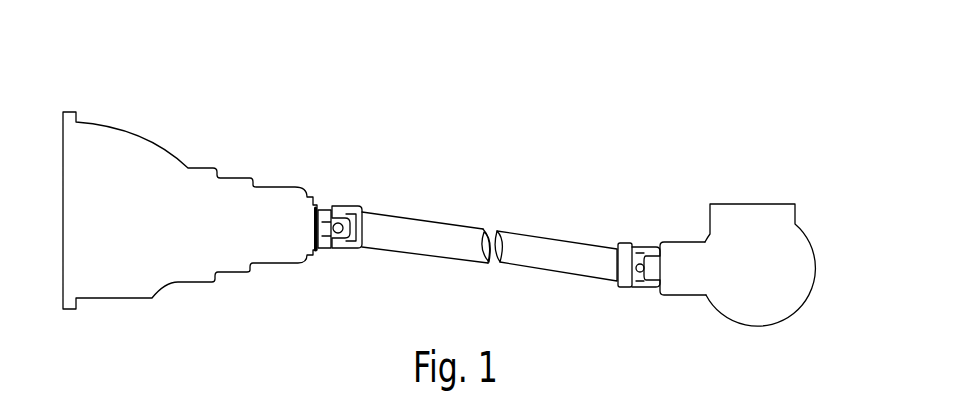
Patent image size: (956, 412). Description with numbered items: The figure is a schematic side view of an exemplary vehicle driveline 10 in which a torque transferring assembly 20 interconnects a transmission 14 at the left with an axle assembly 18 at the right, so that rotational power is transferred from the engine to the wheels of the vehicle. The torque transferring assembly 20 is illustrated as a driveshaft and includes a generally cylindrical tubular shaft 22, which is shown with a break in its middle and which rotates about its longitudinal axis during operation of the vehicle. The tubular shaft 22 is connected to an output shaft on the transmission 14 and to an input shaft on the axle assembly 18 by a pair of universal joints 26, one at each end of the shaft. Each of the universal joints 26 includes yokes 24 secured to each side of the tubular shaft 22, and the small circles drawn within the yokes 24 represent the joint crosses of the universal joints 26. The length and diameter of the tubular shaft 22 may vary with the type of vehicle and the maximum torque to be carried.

The vehicle driveline 10 is at (503, 93).
The transmission 14 is at (128, 143).
The axle assembly 18 is at (756, 217).
The torque transferring assembly 20 is at (519, 213).
The tubular shaft 22 is at (552, 267).
The yokes 24 is at (363, 208).
The universal joints 26 is at (333, 228).